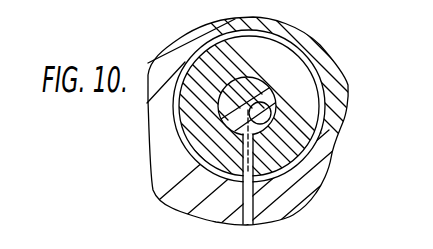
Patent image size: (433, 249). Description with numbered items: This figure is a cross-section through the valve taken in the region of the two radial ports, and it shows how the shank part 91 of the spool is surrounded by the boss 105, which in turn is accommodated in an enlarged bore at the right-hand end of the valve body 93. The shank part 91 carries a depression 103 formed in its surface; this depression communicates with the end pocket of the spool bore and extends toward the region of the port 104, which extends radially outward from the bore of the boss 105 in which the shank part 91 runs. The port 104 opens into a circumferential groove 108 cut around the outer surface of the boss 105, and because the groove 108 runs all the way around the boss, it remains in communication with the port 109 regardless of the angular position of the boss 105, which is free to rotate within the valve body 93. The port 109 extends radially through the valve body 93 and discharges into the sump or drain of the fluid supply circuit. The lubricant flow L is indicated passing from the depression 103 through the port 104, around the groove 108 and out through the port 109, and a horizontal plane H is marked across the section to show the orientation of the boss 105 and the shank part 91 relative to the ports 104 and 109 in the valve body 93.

The valve body 93 is at (96, 20).
The boss 105 is at (298, 70).
The horizontal plane H is at (318, 71).
The shank part 91 is at (348, 62).
The lubricant flow L is at (236, 157).
The port 109 is at (216, 218).
The depression 103 is at (275, 132).
The port 104 is at (245, 157).
The circumferential groove 108 is at (283, 213).